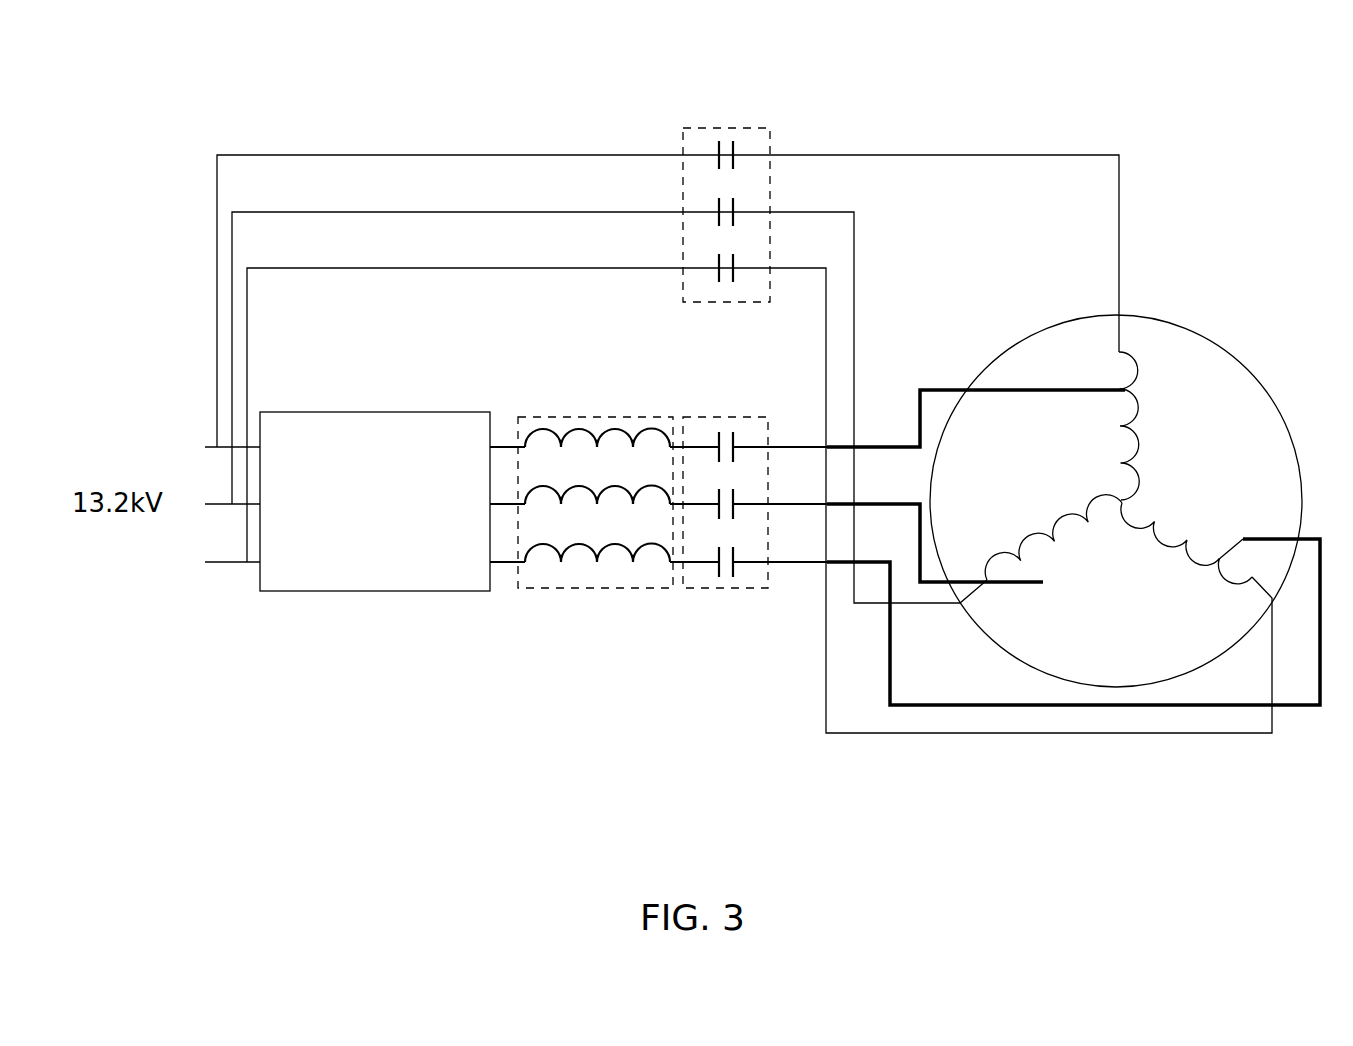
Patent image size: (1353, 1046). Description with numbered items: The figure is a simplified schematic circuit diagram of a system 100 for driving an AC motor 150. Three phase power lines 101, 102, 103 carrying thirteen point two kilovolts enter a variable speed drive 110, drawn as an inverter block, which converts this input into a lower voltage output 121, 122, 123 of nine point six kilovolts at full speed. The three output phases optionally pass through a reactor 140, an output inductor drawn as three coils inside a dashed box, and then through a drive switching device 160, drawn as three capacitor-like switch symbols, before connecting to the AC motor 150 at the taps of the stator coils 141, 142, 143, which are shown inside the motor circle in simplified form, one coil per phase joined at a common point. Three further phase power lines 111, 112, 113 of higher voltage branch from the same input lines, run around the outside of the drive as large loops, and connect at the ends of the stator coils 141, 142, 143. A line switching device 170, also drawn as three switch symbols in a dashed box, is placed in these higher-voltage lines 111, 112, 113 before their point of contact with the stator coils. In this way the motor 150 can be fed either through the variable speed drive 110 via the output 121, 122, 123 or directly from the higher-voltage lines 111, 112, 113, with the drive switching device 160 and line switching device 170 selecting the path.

The system 100 is at (692, 740).
The three phase power line 101 is at (205, 446).
The three phase power line 102 is at (218, 503).
The three phase power line 103 is at (223, 560).
The variable speed drive 110 is at (330, 411).
The three phase power line 111 is at (825, 155).
The three phase power line 112 is at (854, 225).
The three phase power line 113 is at (853, 735).
The voltage output 121 is at (860, 450).
The voltage output 122 is at (862, 508).
The voltage output 123 is at (883, 645).
The reactor 140 is at (552, 589).
The stator coil 141 is at (1138, 480).
The stator coil 142 is at (1090, 493).
The stator coil 143 is at (1130, 530).
The AC motor 150 is at (1142, 315).
The drive switching device 160 is at (743, 417).
The line switching device 170 is at (753, 128).